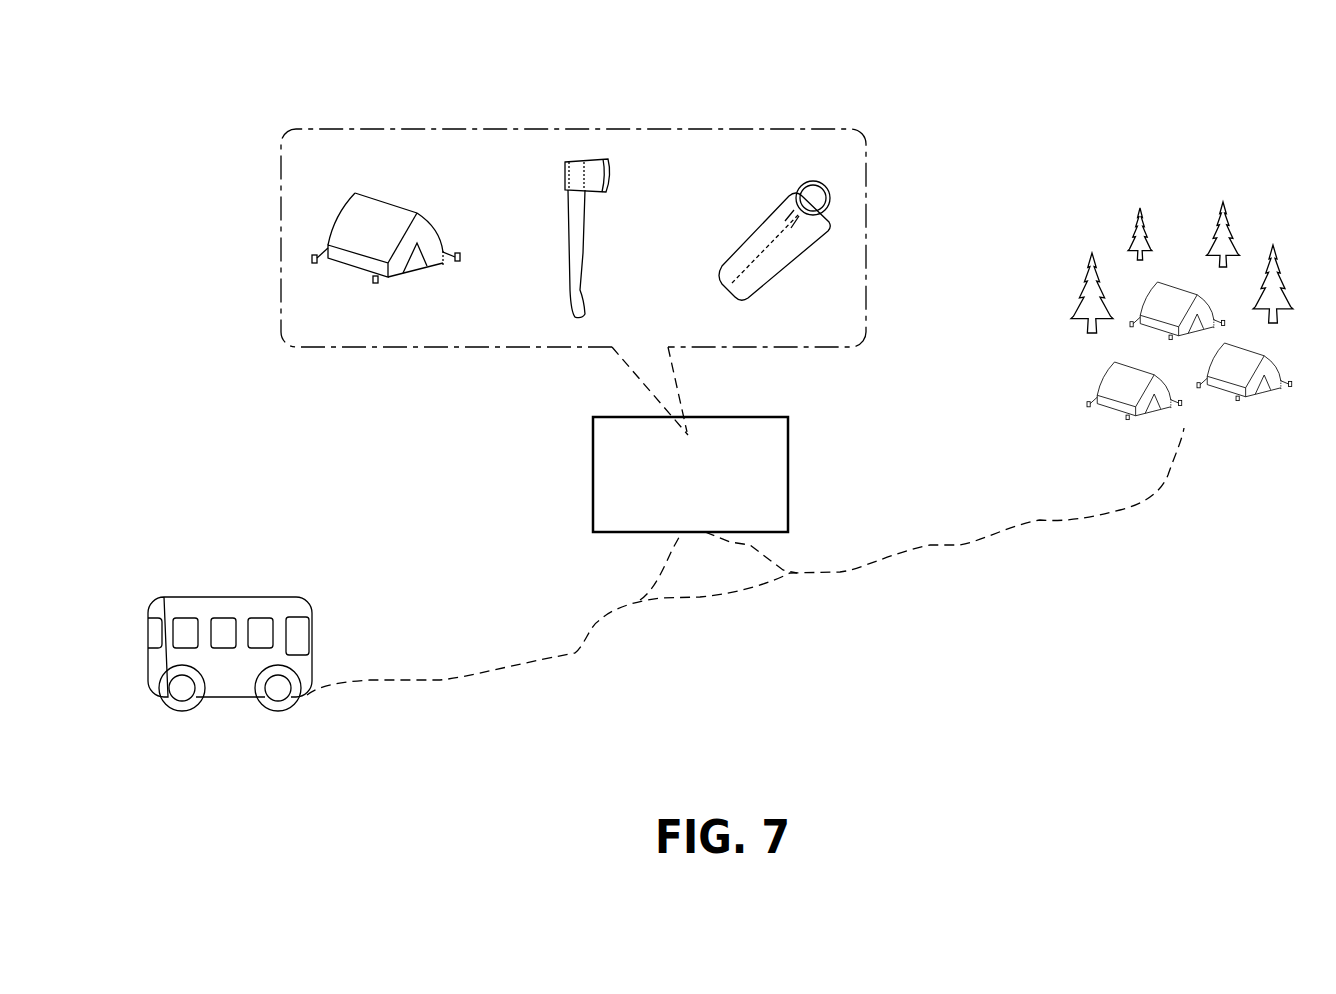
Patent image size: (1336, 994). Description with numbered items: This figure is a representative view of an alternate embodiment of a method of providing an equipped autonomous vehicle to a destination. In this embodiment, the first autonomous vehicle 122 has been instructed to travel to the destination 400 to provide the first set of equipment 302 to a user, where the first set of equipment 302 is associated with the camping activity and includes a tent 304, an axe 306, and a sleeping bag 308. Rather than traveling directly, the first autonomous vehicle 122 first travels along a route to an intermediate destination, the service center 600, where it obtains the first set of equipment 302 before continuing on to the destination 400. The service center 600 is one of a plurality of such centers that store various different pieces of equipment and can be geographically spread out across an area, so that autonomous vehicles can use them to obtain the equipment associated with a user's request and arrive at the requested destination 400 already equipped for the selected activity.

The first set of equipment 302 is at (677, 128).
The tent 304 is at (433, 223).
The axe 306 is at (558, 258).
The sleeping bag 308 is at (752, 217).
The service center 600 is at (789, 468).
The first autonomous vehicle 122 is at (230, 597).
The destination 400 is at (1262, 210).